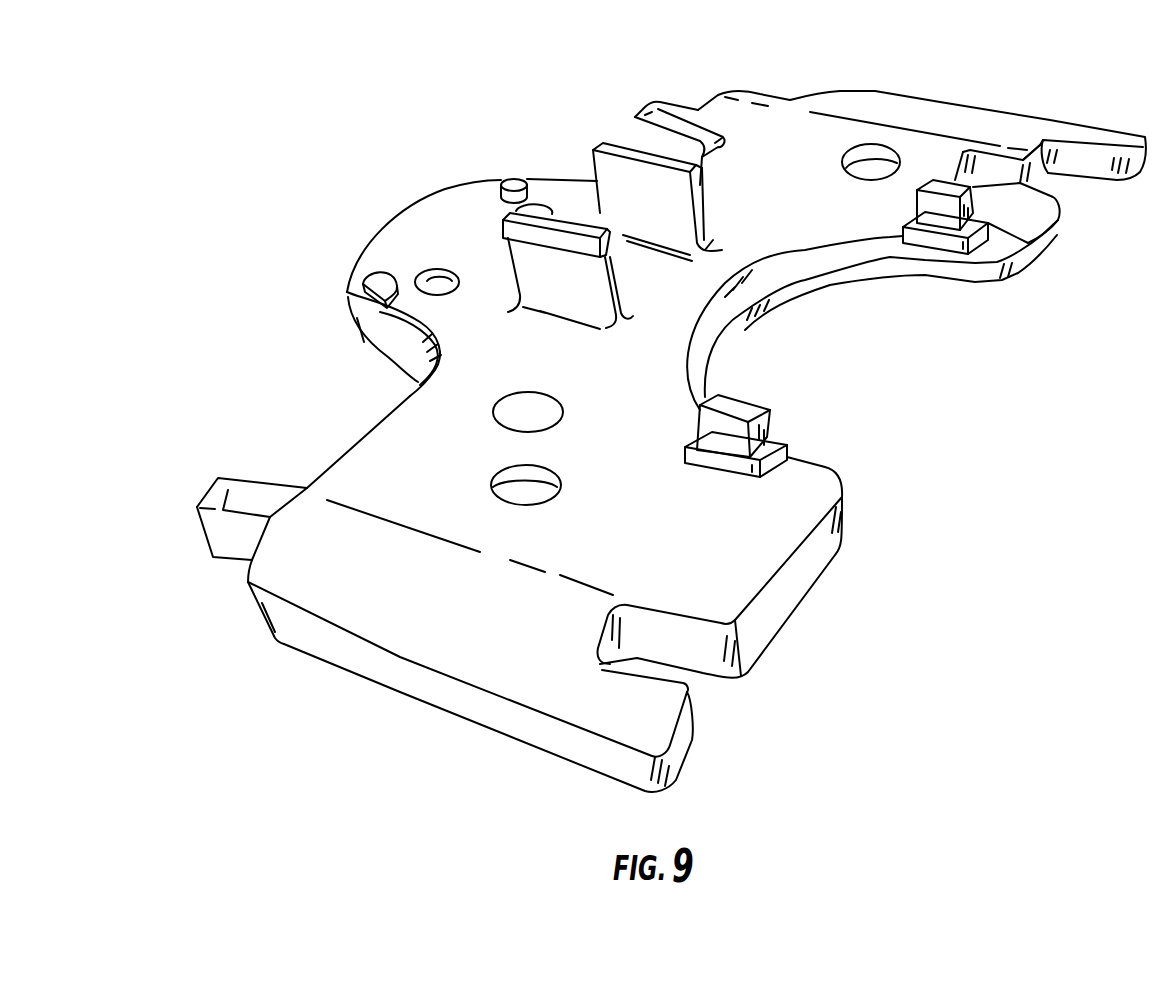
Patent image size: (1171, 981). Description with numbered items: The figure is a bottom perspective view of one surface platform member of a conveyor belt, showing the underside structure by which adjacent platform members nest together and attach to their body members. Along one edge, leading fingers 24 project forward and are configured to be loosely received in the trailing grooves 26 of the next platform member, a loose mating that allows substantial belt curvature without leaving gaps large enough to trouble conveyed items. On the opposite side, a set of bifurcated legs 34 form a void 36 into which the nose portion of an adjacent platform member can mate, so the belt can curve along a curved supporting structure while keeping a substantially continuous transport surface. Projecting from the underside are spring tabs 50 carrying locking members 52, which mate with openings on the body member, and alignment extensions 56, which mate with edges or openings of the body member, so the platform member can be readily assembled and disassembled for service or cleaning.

The leading fingers 24 is at (640, 118).
The trailing grooves 26 is at (1013, 178).
The bifurcated legs 34 is at (760, 553).
The void 36 is at (745, 330).
The spring tabs 50 is at (698, 205).
The locking members 52 is at (703, 170).
The alignment extensions 56 is at (910, 193).